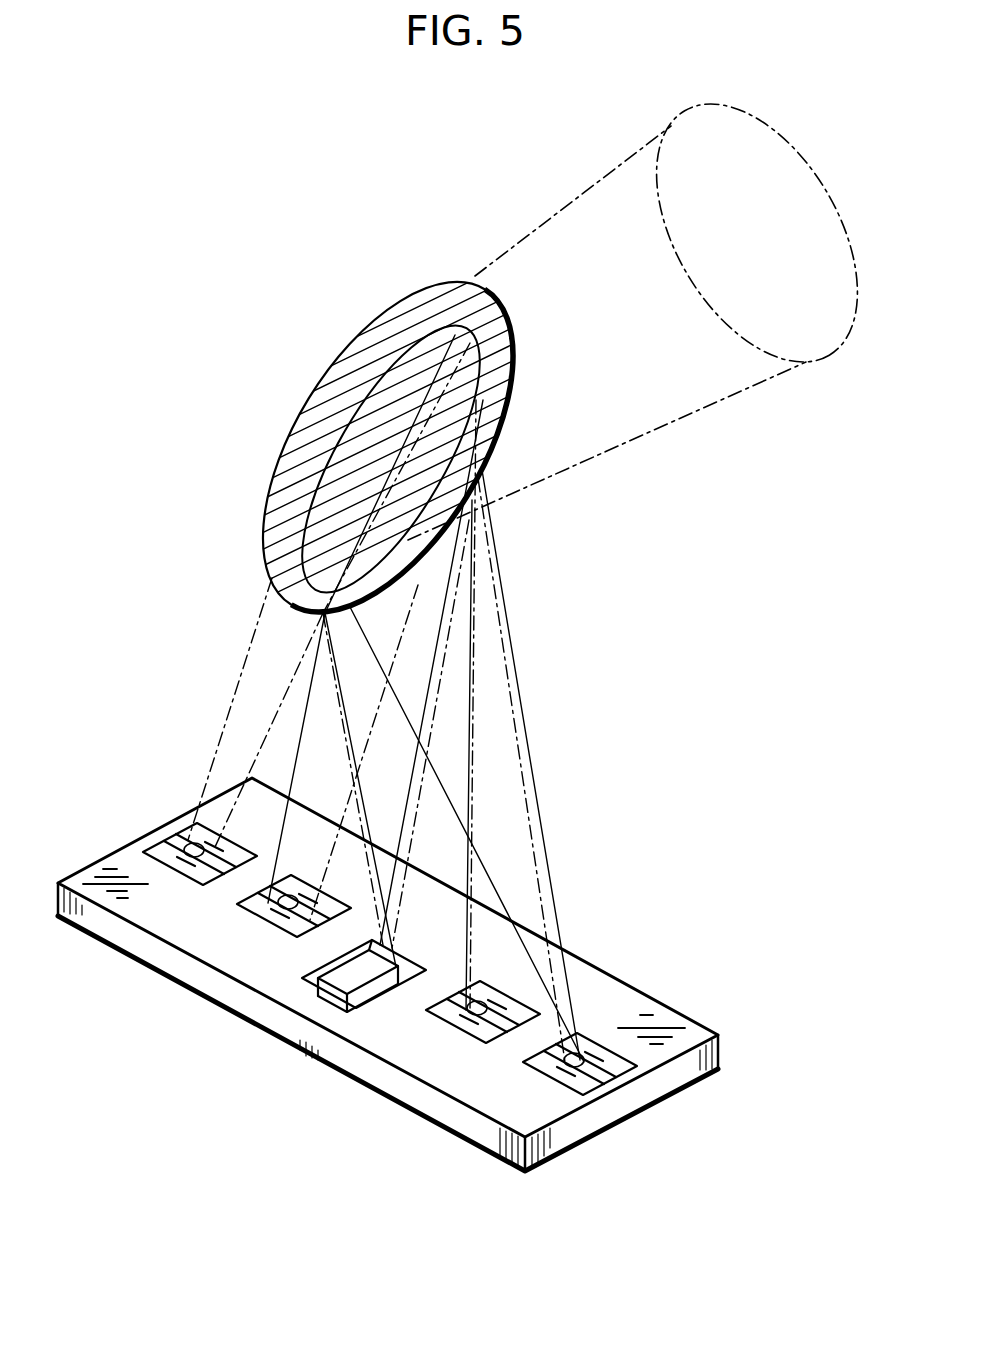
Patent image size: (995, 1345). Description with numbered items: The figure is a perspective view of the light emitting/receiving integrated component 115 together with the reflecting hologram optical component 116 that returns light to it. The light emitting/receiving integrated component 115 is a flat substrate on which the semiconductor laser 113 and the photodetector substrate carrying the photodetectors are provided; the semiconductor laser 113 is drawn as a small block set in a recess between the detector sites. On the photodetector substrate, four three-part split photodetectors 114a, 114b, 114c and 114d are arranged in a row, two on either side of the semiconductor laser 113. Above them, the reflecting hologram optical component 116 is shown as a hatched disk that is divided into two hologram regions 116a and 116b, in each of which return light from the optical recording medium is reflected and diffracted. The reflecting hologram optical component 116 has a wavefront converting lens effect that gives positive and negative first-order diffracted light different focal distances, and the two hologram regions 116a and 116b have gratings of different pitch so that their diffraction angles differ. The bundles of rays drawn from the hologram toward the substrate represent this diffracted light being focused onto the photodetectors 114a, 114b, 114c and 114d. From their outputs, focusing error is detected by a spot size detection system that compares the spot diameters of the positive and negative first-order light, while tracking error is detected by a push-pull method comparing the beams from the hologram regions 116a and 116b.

The semiconductor laser 113 is at (367, 1001).
The three-part split photodetector 114a is at (165, 865).
The three-part split photodetector 114b is at (263, 918).
The three-part split photodetector 114c is at (462, 1029).
The three-part split photodetector 114d is at (539, 1068).
The light emitting/receiving integrated component 115 is at (562, 1154).
The reflecting hologram optical component 116 is at (410, 366).
The hologram region 116a is at (313, 395).
The hologram region 116b is at (512, 330).